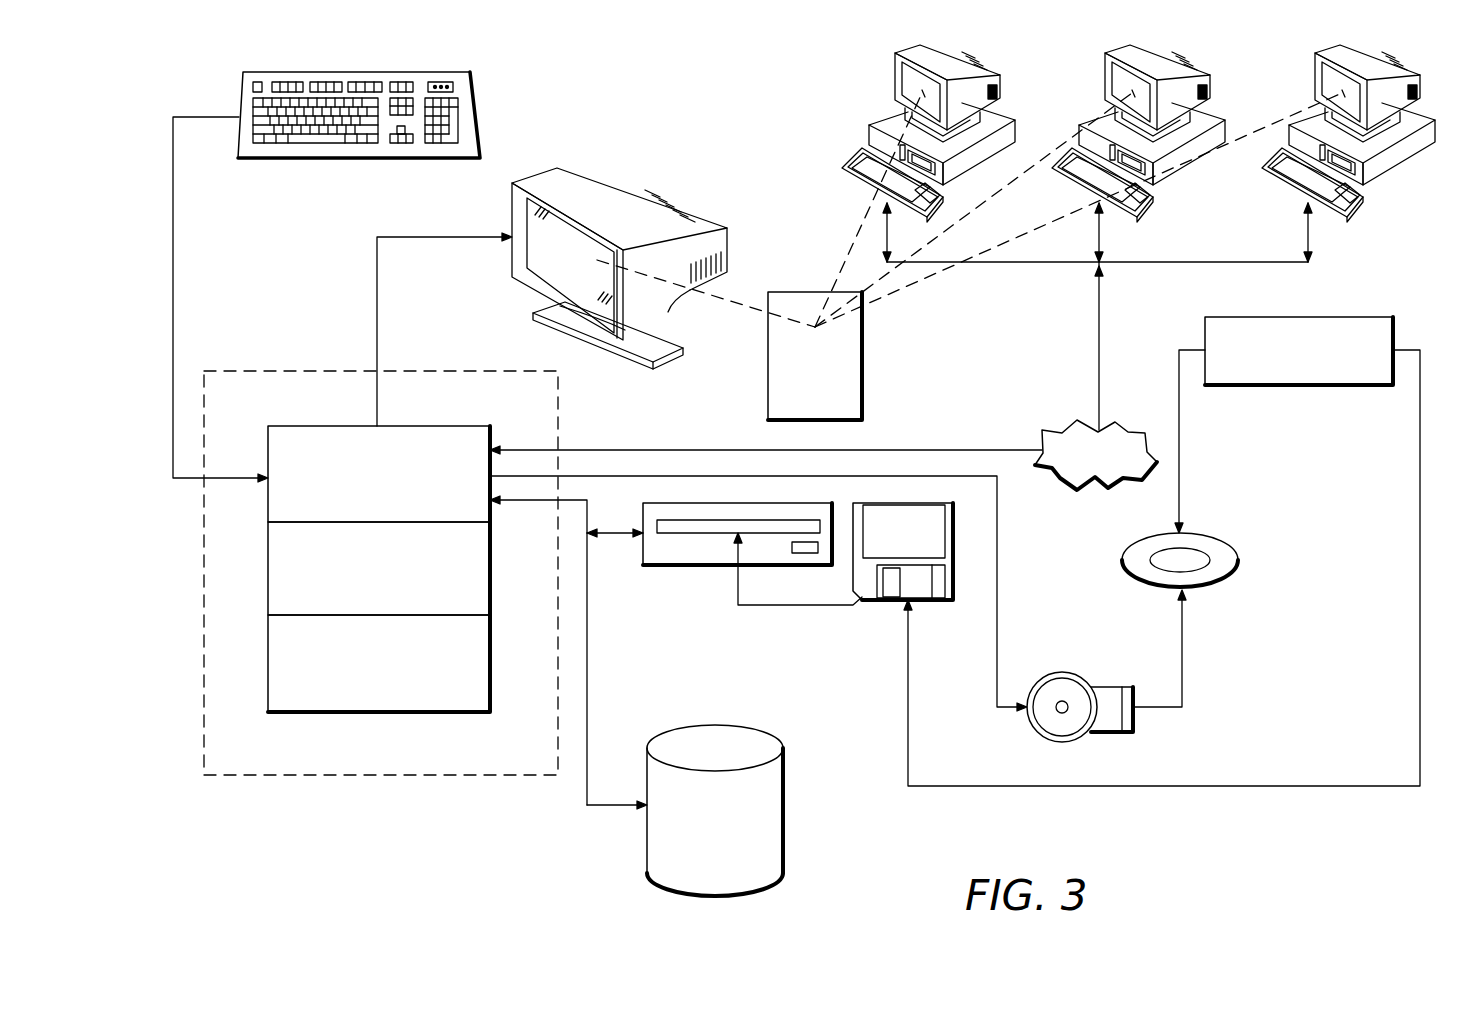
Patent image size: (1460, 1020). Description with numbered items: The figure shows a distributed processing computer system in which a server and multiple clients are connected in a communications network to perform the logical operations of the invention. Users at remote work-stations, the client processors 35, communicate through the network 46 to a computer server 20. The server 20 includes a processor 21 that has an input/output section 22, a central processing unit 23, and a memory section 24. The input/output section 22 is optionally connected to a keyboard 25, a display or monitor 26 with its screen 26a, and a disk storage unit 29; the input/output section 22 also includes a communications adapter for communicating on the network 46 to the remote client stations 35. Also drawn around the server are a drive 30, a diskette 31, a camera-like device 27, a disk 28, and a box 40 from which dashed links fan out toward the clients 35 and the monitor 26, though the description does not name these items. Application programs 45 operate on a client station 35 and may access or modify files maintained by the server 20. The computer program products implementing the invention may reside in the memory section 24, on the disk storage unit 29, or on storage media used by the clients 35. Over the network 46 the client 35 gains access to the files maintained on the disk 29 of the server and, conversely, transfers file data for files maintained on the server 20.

The computer server 20 is at (631, 772).
The processor 21 is at (272, 368).
The input/output section 22 is at (312, 426).
The central processing unit 23 is at (490, 569).
The memory section 24 is at (490, 659).
The keyboard 25 is at (358, 70).
The display or monitor 26 is at (603, 170).
The display screen 26a is at (553, 272).
The camera 27 is at (1107, 687).
The optical disk 28 is at (1210, 533).
The disk storage unit 29 is at (783, 843).
The disk drive 30 is at (690, 567).
The floppy disk 31 is at (935, 603).
The client processors 35 is at (895, 80).
The network 40 is at (862, 342).
The application programs 45 is at (1350, 317).
The network 46 is at (1128, 432).